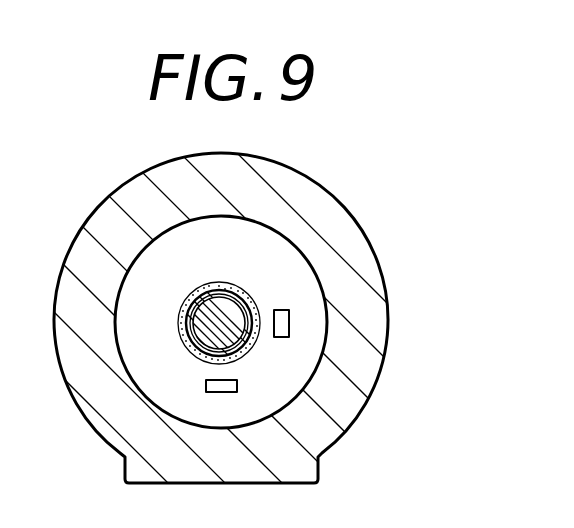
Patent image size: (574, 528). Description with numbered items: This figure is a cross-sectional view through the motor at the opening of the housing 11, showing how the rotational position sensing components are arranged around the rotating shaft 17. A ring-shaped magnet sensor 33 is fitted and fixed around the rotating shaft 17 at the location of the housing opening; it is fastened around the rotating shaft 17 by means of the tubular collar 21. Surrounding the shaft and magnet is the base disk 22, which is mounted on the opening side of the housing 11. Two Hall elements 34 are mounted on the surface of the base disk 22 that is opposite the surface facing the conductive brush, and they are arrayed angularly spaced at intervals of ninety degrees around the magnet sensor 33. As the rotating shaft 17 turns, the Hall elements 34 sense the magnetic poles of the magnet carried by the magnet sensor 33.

The housing 11 is at (287, 315).
The base disk 22 is at (269, 330).
The magnet sensor 33 is at (219, 295).
The tubular collar 21 is at (191, 327).
The rotating shaft 17 is at (226, 318).
The Hall elements 34 is at (321, 418).